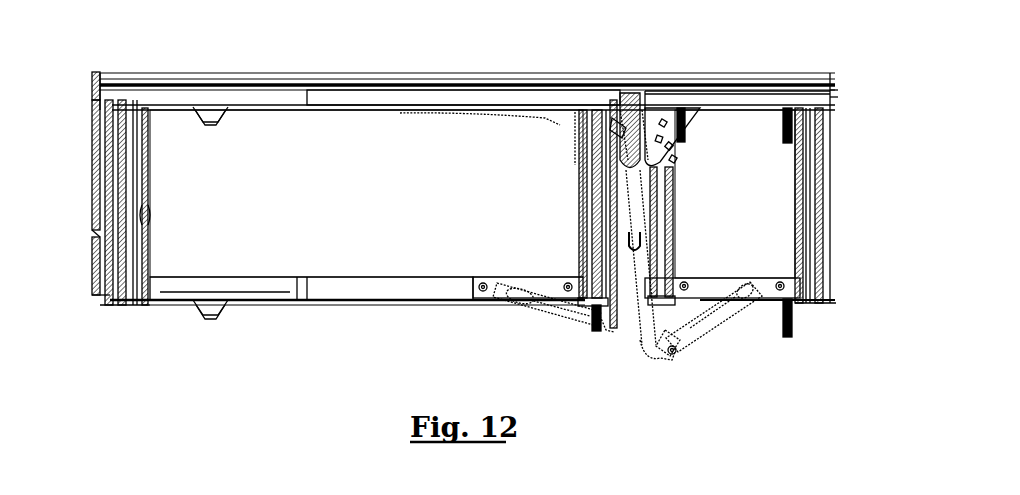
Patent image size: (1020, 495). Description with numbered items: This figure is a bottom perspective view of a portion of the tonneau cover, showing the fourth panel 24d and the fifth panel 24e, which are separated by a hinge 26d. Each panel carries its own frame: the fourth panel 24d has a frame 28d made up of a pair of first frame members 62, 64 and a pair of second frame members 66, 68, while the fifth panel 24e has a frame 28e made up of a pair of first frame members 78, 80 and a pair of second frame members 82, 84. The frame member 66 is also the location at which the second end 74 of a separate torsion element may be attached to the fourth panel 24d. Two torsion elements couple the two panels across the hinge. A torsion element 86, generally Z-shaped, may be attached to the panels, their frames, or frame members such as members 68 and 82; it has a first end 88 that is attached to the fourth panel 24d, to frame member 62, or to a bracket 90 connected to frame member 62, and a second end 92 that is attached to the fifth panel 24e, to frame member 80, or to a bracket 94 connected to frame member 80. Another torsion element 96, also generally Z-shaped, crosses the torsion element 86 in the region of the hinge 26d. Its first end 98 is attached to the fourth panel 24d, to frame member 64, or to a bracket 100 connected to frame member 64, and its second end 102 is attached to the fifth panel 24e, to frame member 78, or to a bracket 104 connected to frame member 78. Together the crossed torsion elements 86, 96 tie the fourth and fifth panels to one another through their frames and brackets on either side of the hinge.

The first frame member 64 is at (377, 98).
The bracket 100 is at (545, 112).
The first end 98 is at (580, 113).
The hinge 26d is at (632, 118).
The second end 92 is at (703, 123).
The bracket 94 is at (718, 112).
The first frame member 80 is at (752, 95).
The frame 28e is at (835, 66).
The second frame member 66 is at (128, 162).
The second end 74 is at (150, 224).
The fourth panel 24d is at (394, 207).
The fifth panel 24e is at (752, 207).
The second frame member 84 is at (815, 200).
The second frame member 68 is at (590, 233).
The second frame member 82 is at (663, 237).
The frame 28d is at (258, 312).
The first frame member 62 is at (410, 292).
The bracket 90 is at (486, 297).
The first end 88 is at (540, 295).
The torsion element 86 is at (618, 330).
The torsion element 96 is at (645, 349).
The second end 102 is at (707, 307).
The bracket 104 is at (693, 332).
The first frame member 78 is at (774, 294).